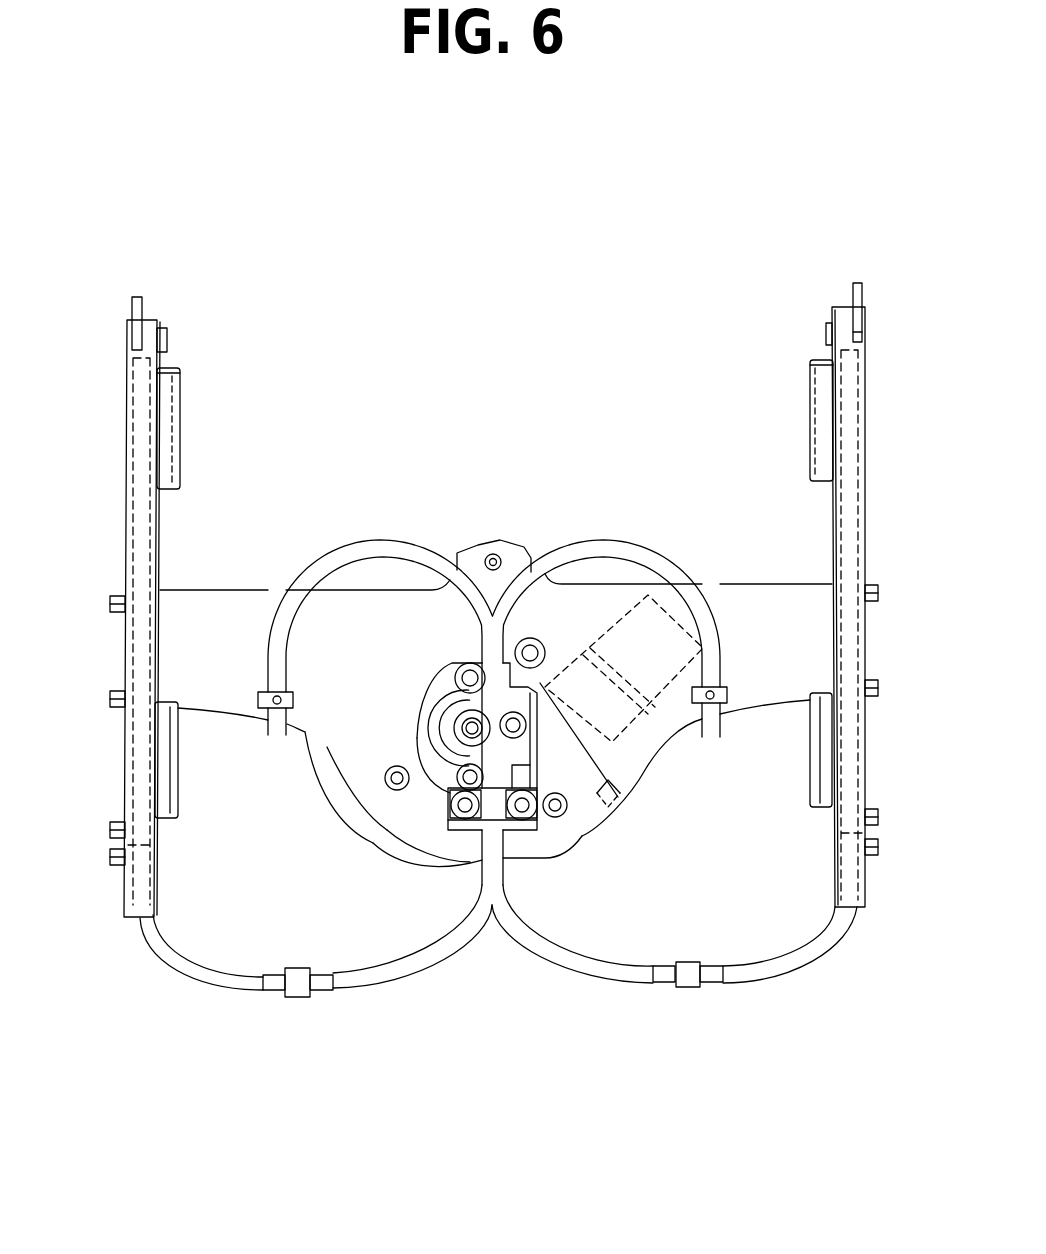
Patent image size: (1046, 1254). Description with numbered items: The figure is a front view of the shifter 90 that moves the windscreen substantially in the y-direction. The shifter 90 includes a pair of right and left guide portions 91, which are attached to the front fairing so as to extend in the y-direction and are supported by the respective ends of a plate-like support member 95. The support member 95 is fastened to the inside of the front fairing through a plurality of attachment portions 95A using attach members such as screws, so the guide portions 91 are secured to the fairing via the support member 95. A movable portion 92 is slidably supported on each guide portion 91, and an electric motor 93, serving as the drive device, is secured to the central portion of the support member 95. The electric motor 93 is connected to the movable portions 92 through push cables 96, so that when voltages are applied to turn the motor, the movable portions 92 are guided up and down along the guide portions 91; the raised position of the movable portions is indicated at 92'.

The shifter 90 is at (604, 344).
The guide portion 91 is at (135, 383).
The movable portion 92 is at (493, 757).
The movable portion (moved upward) 92' is at (495, 417).
The electric motor 93 is at (367, 840).
The support member 95 is at (240, 600).
The attachment portion 95A is at (501, 554).
The push cable 96 is at (202, 970).